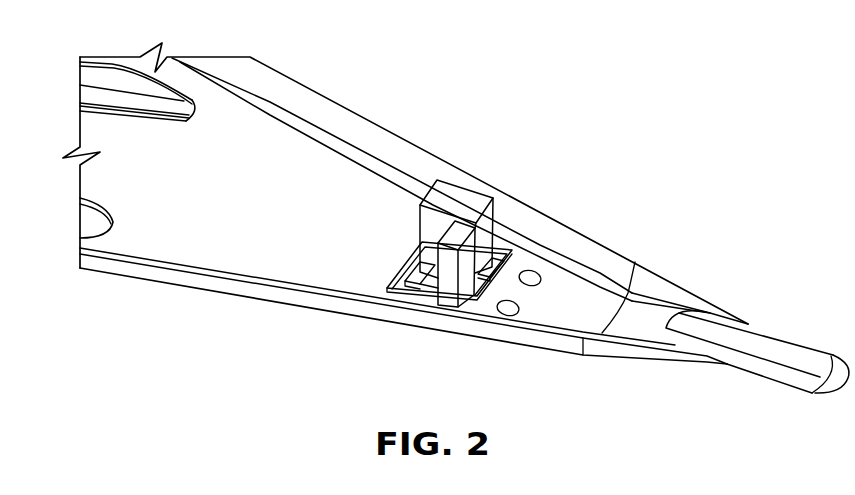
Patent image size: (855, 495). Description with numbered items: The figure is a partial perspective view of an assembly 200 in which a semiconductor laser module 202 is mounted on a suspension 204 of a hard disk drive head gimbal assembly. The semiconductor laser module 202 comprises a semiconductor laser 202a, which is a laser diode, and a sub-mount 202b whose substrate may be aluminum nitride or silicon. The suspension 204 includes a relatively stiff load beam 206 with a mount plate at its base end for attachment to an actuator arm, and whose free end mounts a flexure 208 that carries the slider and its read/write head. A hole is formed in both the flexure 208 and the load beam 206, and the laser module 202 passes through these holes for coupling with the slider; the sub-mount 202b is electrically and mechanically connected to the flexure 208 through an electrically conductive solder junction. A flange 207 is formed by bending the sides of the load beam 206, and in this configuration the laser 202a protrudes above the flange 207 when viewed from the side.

The assembly 200 is at (686, 61).
The semiconductor laser module 202 is at (525, 236).
The semiconductor laser 202a is at (448, 265).
The sub-mount 202b is at (453, 197).
The suspension 204 is at (122, 147).
The load beam 206 is at (638, 318).
The flange 207 is at (605, 257).
The flexure 208 is at (117, 99).